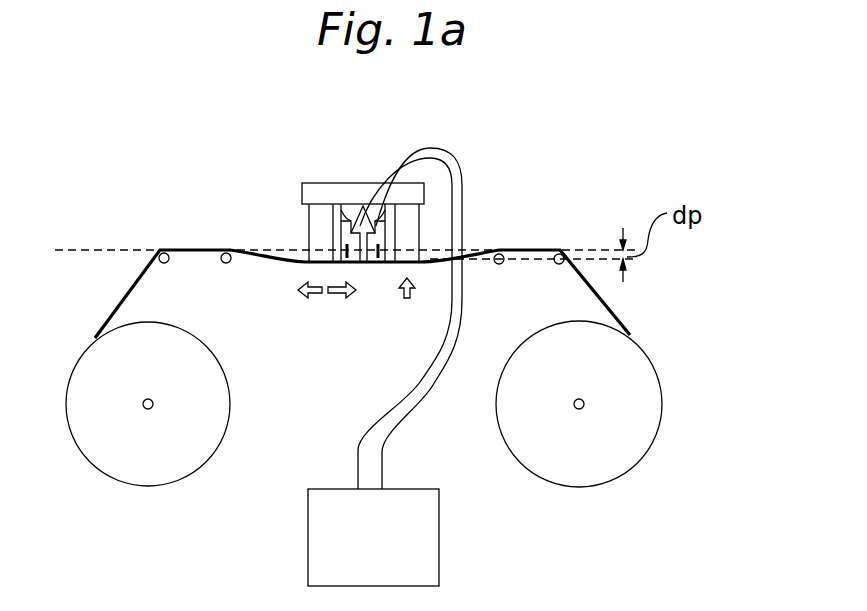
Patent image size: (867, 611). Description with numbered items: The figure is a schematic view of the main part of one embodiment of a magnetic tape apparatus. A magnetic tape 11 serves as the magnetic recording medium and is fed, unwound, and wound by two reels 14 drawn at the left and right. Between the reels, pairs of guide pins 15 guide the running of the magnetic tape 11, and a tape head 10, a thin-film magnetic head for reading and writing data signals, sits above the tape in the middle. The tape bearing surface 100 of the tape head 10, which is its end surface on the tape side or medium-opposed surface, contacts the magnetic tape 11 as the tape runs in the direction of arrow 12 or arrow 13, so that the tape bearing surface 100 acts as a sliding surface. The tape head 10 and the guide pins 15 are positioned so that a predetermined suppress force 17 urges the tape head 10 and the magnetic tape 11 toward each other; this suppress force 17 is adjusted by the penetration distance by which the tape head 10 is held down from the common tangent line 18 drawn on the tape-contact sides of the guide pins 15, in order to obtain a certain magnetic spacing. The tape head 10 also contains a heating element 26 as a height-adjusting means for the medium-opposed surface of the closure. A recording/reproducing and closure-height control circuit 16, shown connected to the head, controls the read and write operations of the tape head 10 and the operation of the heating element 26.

The tape head 10 is at (340, 168).
The magnetic tape 11 is at (617, 312).
The arrow 12 is at (305, 291).
The arrow 13 is at (325, 343).
The reels 14 is at (231, 417).
The guide pins 15 is at (236, 251).
The recording/reproducing and closure-height control circuit 16 is at (432, 553).
The suppress force 17 is at (424, 291).
The common tangent line 18 is at (104, 249).
The heating element 26 is at (331, 262).
The tape bearing surface 100 is at (391, 262).